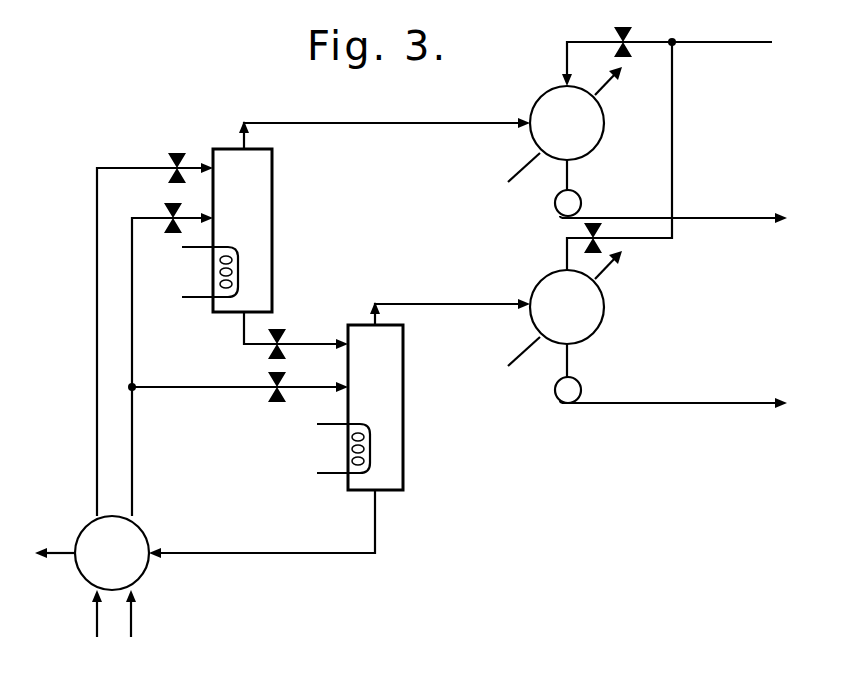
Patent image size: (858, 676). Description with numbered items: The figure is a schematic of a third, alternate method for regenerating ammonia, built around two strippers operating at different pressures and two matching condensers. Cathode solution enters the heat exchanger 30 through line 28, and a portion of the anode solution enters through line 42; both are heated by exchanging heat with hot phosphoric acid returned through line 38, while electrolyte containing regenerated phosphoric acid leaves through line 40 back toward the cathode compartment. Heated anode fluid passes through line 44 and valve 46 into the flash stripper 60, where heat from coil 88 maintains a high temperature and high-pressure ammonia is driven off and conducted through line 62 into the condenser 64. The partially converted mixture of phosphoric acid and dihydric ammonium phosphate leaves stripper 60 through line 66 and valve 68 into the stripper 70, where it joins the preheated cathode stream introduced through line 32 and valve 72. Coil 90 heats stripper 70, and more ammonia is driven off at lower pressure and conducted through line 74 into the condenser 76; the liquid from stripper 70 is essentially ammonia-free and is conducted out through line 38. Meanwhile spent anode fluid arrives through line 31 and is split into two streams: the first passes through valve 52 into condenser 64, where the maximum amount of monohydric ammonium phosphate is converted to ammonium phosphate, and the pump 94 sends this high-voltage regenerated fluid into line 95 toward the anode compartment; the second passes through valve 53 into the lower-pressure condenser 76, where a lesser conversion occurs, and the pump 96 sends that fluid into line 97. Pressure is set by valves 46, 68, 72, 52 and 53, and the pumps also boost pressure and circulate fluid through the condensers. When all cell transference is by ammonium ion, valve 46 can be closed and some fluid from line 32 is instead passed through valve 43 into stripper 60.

The line 28 is at (134, 622).
The heat exchanger 30 is at (124, 565).
The line 31 is at (723, 42).
The line 32 is at (132, 446).
The line 38 is at (376, 518).
The line 40 is at (62, 548).
The line 42 is at (92, 617).
The valve 43 is at (166, 208).
The line 44 is at (97, 276).
The valve 46 is at (168, 158).
The valve 52 is at (620, 32).
The valve 53 is at (582, 233).
The flash stripper 60 is at (253, 204).
The line 62 is at (320, 122).
The condenser 64 is at (603, 138).
The line 66 is at (246, 345).
The valve 68 is at (282, 333).
The stripper 70 is at (386, 362).
The valve 72 is at (271, 399).
The line 74 is at (465, 303).
The condenser 76 is at (606, 313).
The coil 88 is at (198, 300).
The coil 90 is at (331, 476).
The pump 94 is at (580, 206).
The line 95 is at (657, 217).
The pump 96 is at (582, 388).
The line 97 is at (697, 402).